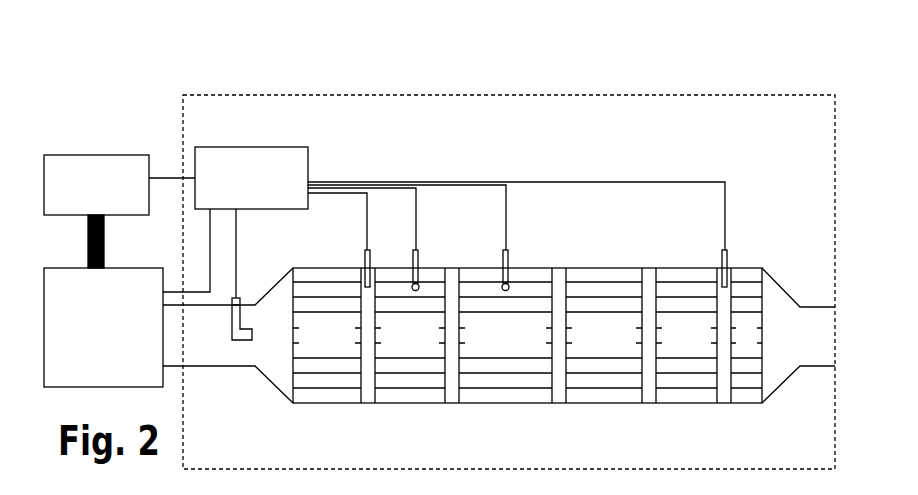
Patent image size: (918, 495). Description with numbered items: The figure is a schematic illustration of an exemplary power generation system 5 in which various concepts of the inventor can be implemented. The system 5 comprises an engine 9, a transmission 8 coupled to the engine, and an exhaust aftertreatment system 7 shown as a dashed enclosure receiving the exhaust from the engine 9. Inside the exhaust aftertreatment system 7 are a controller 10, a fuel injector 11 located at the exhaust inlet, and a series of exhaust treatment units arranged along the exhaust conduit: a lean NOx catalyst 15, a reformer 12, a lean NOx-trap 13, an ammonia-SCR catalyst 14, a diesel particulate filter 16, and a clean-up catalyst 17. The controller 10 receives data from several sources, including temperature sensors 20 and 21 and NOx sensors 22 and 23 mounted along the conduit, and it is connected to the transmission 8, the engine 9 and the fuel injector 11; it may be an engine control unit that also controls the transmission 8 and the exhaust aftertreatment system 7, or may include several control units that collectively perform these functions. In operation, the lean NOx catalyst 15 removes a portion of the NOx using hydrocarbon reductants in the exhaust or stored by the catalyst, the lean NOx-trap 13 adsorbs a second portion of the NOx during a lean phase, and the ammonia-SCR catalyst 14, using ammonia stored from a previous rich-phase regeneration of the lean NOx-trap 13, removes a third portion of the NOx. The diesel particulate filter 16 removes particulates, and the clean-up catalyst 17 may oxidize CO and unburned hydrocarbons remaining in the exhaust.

The power generation system 5 is at (160, 80).
The exhaust aftertreatment system 7 is at (643, 117).
The transmission 8 is at (127, 158).
The engine 9 is at (122, 275).
The controller 10 is at (292, 158).
The fuel injector 11 is at (238, 298).
The reformer 12 is at (405, 395).
The lean NOx-trap 13 is at (497, 395).
The ammonia-SCR catalyst 14 is at (603, 397).
The lean NOx catalyst 15 is at (325, 397).
The diesel particulate filter 16 is at (687, 397).
The clean-up catalyst 17 is at (745, 397).
The temperature sensor 20 is at (420, 250).
The temperature sensor 21 is at (509, 250).
The NOx sensor 22 is at (371, 250).
The NOx sensor 23 is at (728, 252).